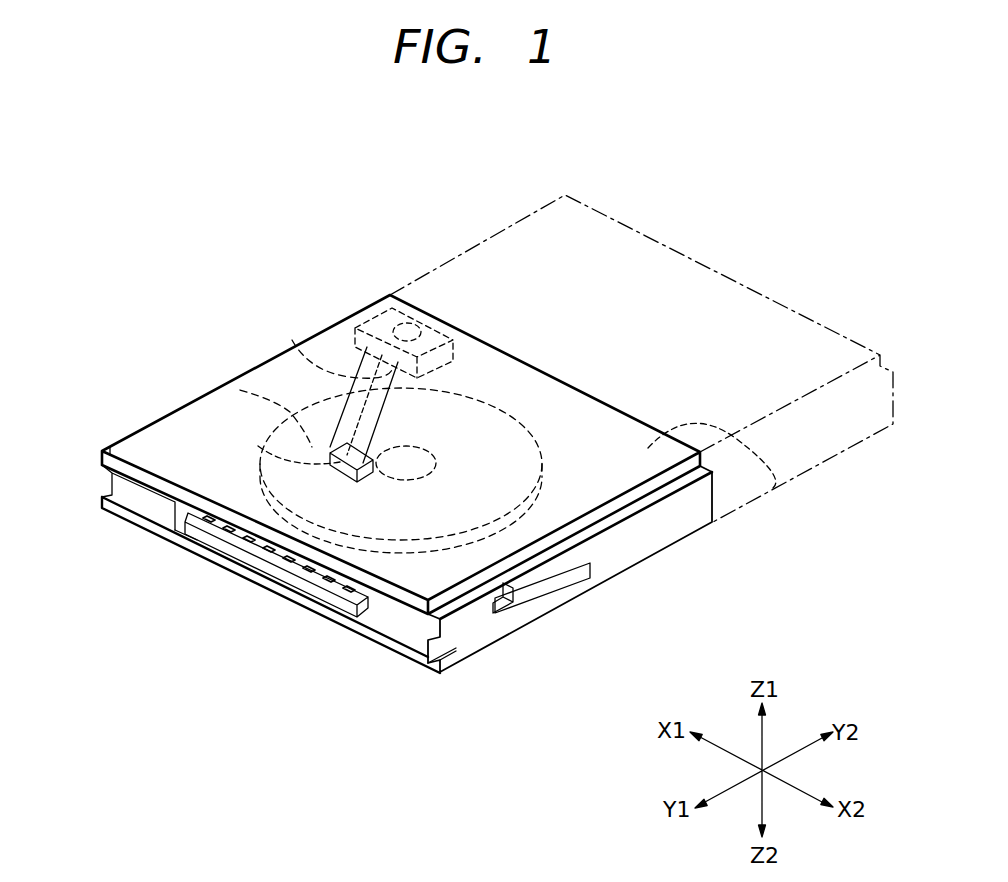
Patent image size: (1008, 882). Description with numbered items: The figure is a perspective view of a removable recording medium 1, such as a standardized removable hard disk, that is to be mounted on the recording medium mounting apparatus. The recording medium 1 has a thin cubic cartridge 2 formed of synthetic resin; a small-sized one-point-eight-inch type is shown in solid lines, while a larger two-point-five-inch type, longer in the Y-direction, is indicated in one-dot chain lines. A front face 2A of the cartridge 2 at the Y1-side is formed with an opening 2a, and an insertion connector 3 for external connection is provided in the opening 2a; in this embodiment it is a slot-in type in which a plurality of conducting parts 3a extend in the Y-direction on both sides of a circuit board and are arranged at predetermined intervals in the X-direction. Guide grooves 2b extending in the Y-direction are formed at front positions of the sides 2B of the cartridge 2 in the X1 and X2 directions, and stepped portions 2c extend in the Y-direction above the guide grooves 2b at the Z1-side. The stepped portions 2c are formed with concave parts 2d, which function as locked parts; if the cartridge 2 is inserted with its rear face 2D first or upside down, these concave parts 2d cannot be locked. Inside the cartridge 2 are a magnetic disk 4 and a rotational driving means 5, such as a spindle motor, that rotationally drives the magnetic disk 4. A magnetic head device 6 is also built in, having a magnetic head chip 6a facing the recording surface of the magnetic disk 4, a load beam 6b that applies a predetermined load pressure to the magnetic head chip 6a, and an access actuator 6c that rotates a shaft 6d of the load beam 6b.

The recording medium 1 is at (304, 283).
The cartridge 2 is at (192, 418).
The front face 2A is at (400, 630).
The sides 2B is at (147, 415).
The rear face 2D is at (773, 488).
The opening 2a is at (197, 538).
The guide grooves 2b is at (100, 482).
The stepped portions 2c is at (105, 447).
The concave parts 2d is at (497, 578).
The insertion connector 3 is at (280, 570).
The conducting parts 3a is at (245, 556).
The magnetic disk 4 is at (298, 437).
The rotational driving means 5 is at (542, 450).
The magnetic head device 6 is at (369, 297).
The magnetic head chip 6a is at (258, 446).
The load beam 6b is at (292, 340).
The access actuator 6c is at (455, 342).
The shaft 6d is at (398, 318).